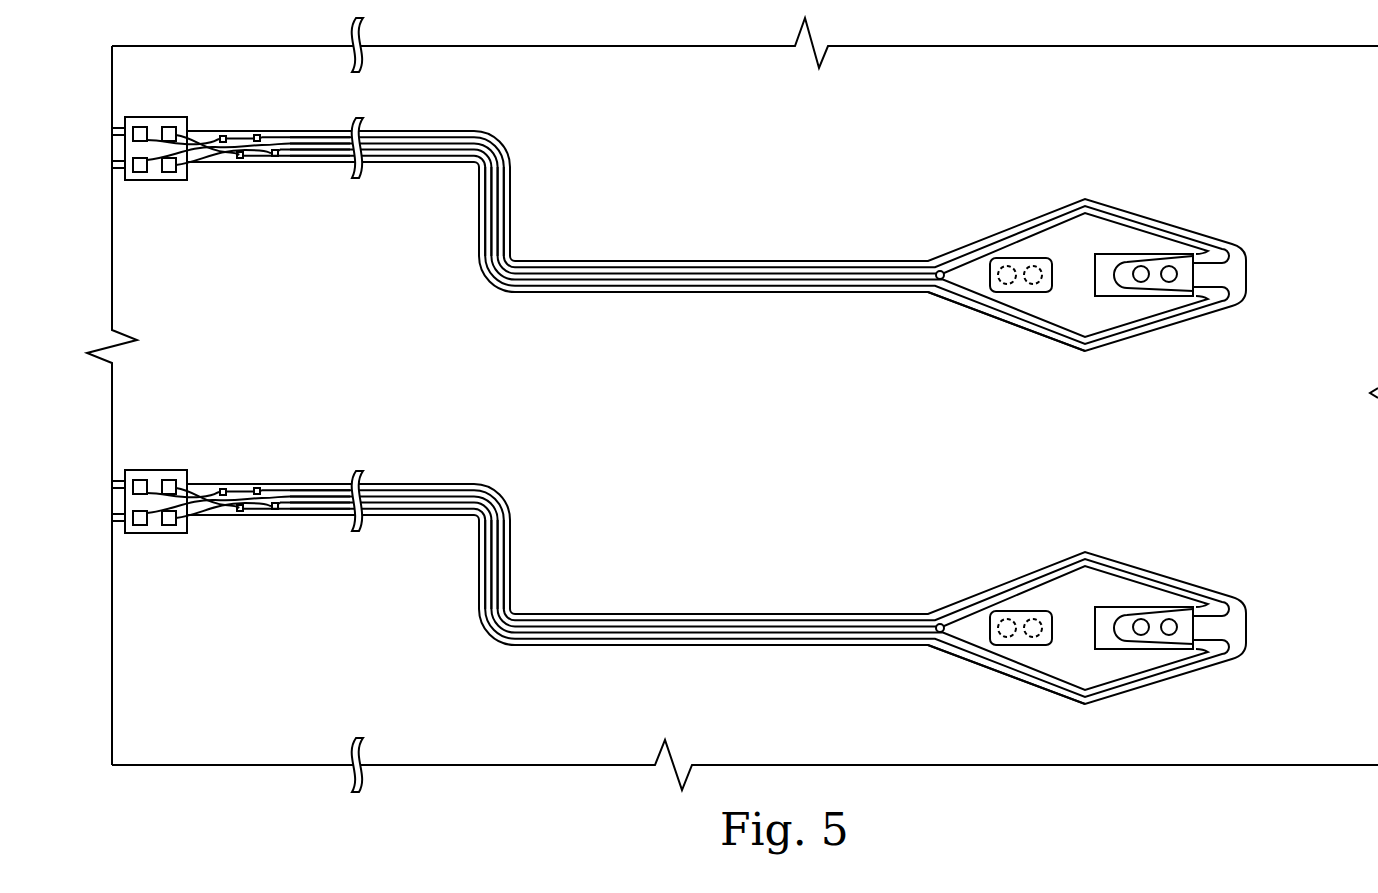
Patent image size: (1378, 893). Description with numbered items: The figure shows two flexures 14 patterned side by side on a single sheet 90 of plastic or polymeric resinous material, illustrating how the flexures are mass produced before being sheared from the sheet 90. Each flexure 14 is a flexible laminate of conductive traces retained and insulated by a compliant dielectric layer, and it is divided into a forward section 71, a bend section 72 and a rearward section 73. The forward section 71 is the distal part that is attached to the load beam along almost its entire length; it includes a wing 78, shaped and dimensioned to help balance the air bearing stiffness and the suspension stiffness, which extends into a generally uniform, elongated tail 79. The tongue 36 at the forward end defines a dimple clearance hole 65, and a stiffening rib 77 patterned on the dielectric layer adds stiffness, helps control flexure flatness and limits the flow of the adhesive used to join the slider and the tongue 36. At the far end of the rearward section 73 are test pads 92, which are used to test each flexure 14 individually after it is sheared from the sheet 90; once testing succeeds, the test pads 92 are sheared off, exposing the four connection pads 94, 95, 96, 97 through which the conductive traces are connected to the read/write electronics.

The flexure 14 is at (759, 226).
The tongue 36 is at (1144, 454).
The dimple clearance hole 65 is at (1170, 266).
The forward section 71 is at (650, 254).
The bend section 72 is at (482, 225).
The rearward section 73 is at (323, 163).
The stiffening rib 77 is at (1020, 258).
The wing 78 is at (1008, 323).
The tail 79 is at (705, 294).
The sheet 90 is at (847, 174).
The test pads 92 is at (155, 117).
The connection pad 94 is at (223, 136).
The connection pad 95 is at (257, 135).
The connection pad 96 is at (240, 158).
The connection pad 97 is at (275, 156).